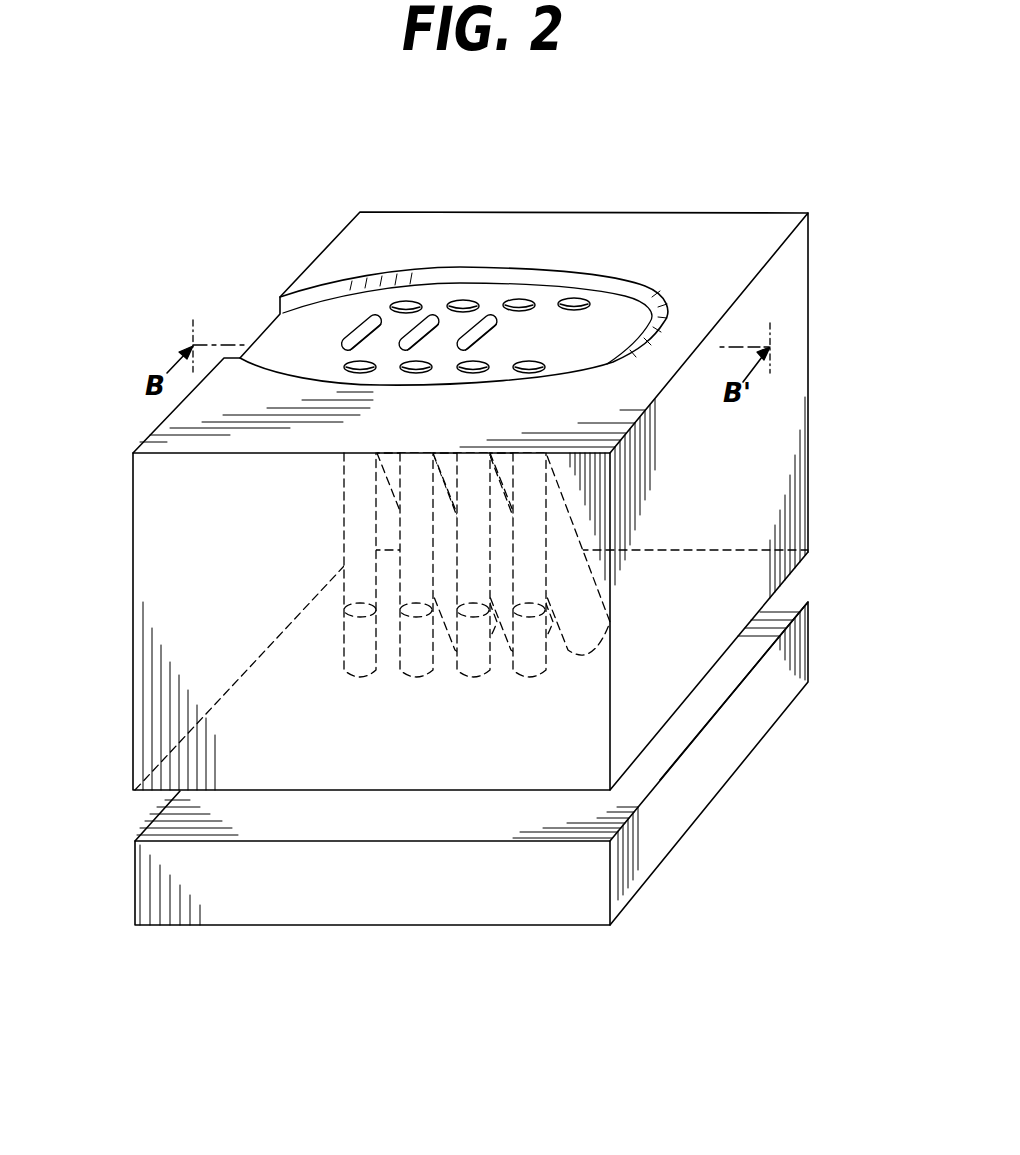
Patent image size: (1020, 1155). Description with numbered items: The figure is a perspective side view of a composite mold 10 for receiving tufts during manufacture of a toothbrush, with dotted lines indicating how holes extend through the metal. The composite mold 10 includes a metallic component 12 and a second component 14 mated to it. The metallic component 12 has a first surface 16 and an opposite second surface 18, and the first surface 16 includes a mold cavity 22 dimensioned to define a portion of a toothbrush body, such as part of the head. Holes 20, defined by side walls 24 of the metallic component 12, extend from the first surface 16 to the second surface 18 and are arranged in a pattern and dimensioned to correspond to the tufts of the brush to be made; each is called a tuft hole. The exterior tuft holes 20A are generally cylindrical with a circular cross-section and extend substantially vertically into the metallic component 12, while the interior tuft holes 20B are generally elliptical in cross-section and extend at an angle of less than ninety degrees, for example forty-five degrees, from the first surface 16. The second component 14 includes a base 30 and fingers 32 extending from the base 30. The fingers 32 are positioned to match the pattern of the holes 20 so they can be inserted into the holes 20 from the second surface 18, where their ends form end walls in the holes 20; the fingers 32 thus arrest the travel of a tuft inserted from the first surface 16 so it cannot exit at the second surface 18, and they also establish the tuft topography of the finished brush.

The composite mold 10 is at (482, 536).
The metallic component 12 is at (480, 455).
The second component 14 is at (519, 803).
The first surface 16 is at (435, 286).
The second surface 18 is at (793, 572).
The holes 20 is at (326, 297).
The exterior tuft holes 20A is at (407, 303).
The interior tuft holes 20B is at (363, 327).
The mold cavity 22 is at (604, 330).
The side walls 24 is at (434, 318).
The base 30 is at (568, 895).
The fingers 32 is at (443, 600).